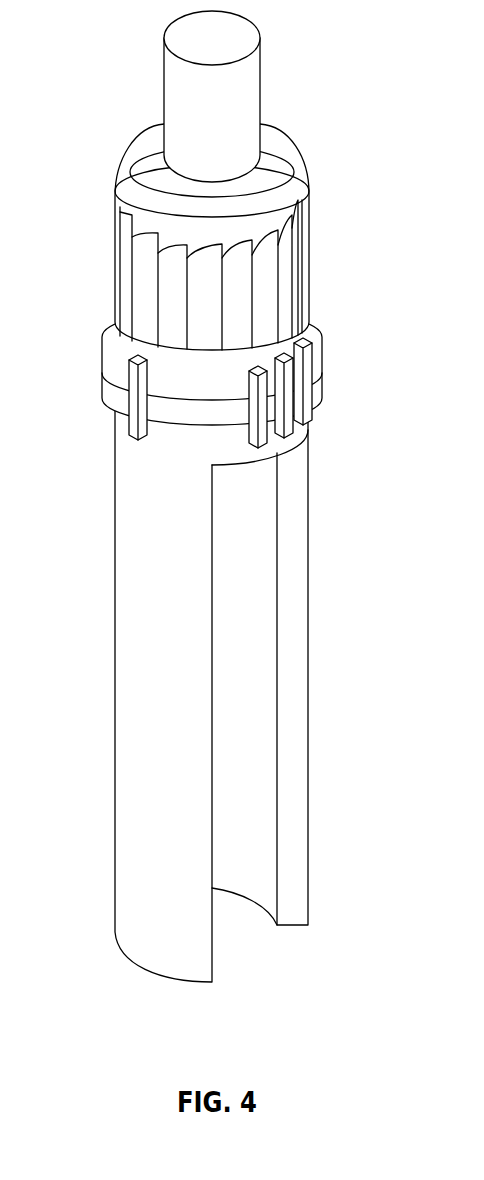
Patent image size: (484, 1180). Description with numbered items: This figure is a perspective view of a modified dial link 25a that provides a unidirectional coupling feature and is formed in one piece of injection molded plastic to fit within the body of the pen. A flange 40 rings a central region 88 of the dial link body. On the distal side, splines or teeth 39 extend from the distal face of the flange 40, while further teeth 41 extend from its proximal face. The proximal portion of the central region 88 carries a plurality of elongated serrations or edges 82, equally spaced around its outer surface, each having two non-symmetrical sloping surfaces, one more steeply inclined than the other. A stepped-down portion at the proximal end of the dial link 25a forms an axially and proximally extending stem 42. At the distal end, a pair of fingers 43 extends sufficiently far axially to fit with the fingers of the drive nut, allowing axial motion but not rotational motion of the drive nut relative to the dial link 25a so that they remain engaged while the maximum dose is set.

The stem 42 is at (258, 78).
The modified dial link 25a is at (305, 170).
The central region 88 is at (310, 247).
The serrations or edges 82 is at (125, 272).
The teeth 41 is at (120, 378).
The splines or teeth 39 is at (128, 428).
The flange 40 is at (305, 408).
The fingers 43 is at (295, 695).